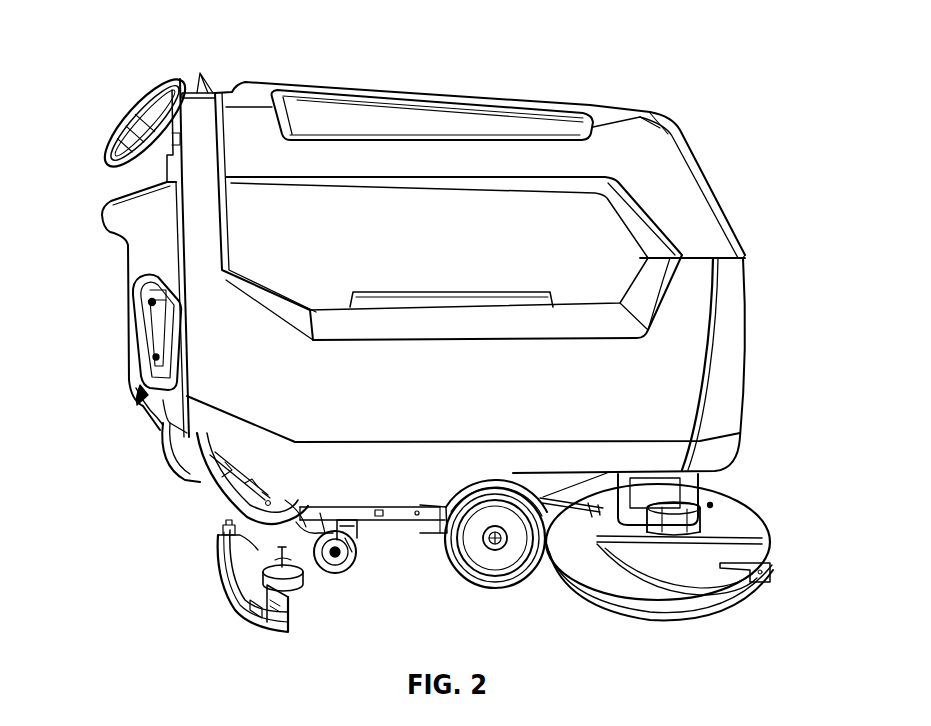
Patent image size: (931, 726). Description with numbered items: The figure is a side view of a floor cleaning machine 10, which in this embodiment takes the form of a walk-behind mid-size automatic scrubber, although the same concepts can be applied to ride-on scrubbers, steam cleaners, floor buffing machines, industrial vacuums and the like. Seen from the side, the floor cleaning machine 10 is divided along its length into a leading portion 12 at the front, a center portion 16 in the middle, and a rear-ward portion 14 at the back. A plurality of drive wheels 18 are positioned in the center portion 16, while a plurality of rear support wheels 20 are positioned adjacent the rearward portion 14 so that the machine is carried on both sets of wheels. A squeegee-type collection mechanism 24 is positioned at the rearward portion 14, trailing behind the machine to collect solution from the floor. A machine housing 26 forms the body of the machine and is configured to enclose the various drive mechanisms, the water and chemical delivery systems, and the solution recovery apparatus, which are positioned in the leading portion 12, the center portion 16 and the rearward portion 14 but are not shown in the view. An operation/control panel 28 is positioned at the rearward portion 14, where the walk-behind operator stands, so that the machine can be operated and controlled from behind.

The floor cleaning machine 10 is at (768, 95).
The leading portion 12 is at (748, 345).
The rear-ward portion 14 is at (110, 213).
The center portion 16 is at (658, 75).
The drive wheels 18 is at (495, 587).
The rear support wheels 20 is at (343, 570).
The squeegee-type collection mechanism 24 is at (237, 610).
The machine housing 26 is at (675, 122).
The operation/control panel 28 is at (132, 100).